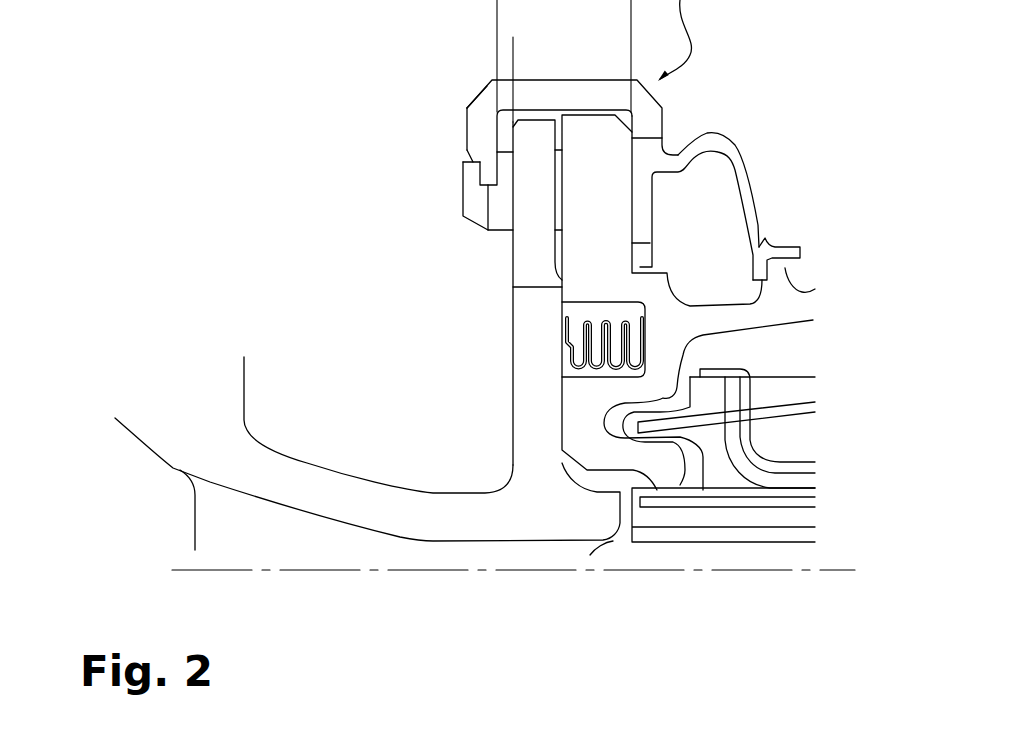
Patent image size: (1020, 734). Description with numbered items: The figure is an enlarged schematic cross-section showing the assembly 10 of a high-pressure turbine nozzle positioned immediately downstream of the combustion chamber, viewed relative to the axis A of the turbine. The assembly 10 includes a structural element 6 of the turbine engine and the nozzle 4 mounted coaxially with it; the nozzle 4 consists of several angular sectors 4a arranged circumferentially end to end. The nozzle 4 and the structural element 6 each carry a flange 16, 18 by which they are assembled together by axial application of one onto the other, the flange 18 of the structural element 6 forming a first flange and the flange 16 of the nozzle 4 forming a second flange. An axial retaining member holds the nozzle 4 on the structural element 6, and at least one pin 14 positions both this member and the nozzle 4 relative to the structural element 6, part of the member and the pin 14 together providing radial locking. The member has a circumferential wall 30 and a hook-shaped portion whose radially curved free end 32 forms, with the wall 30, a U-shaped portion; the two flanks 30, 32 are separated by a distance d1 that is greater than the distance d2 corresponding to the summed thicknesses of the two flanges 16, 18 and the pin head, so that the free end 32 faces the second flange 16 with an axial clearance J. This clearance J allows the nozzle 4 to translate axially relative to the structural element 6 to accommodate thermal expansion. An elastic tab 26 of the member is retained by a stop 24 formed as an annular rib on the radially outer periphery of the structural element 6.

The assembly 10 is at (375, 76).
The circumferential wall 30 is at (645, 117).
The free end 32 is at (475, 118).
The pin 14 is at (477, 227).
The flange 16 is at (527, 166).
The flange 18 is at (588, 192).
The elastic tab 26 is at (747, 193).
The stop 24 is at (778, 267).
The structural element 6 is at (740, 314).
The nozzle 4 is at (333, 456).
The angular sector 4a is at (205, 523).
The axis A is at (796, 578).
The distance d1 is at (631, 20).
The distance d2 is at (631, 53).
The clearance J is at (555, 69).